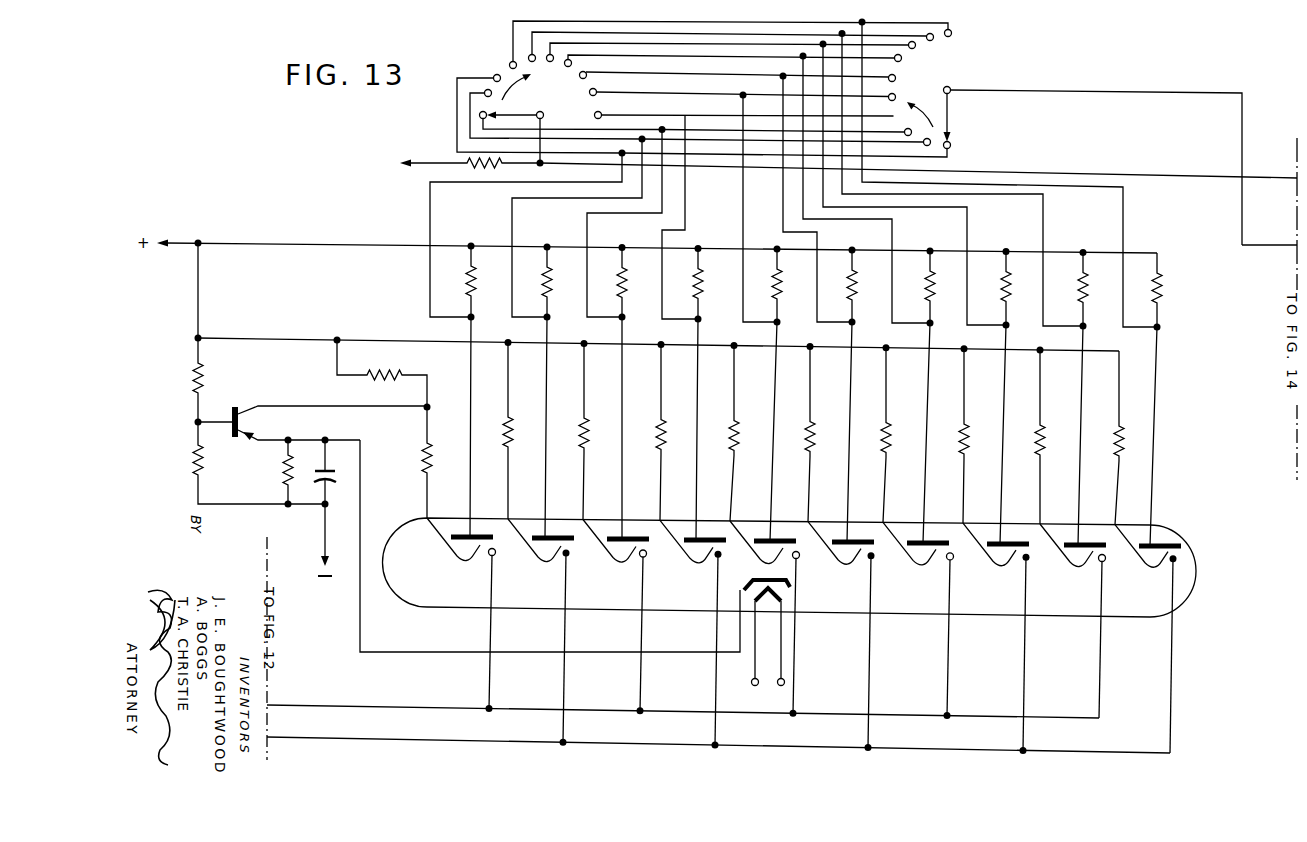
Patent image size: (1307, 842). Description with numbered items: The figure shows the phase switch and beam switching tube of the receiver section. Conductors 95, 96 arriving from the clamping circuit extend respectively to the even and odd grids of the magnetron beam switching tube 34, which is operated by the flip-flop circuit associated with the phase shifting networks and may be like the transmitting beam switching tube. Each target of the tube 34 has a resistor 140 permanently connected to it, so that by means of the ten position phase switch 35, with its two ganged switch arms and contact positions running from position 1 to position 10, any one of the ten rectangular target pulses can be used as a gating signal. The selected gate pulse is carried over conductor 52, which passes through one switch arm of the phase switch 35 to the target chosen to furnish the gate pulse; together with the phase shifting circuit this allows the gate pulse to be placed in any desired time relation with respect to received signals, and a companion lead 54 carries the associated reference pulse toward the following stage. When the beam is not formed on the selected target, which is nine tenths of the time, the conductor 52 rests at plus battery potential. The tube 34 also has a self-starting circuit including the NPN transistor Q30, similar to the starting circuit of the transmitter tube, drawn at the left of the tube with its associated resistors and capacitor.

The ten position phase switch 35 is at (482, 55).
The resistor 140 is at (466, 290).
The magnetron beam switching tube 34 is at (403, 493).
The gate pulse lead 54 is at (1252, 185).
The conductor 52 is at (1250, 223).
The conductor 95 is at (290, 705).
The conductor 96 is at (303, 738).
The NPN transistor Q30 is at (245, 420).
The switch position 10 is at (767, 78).
The switch position 1 is at (720, 130).